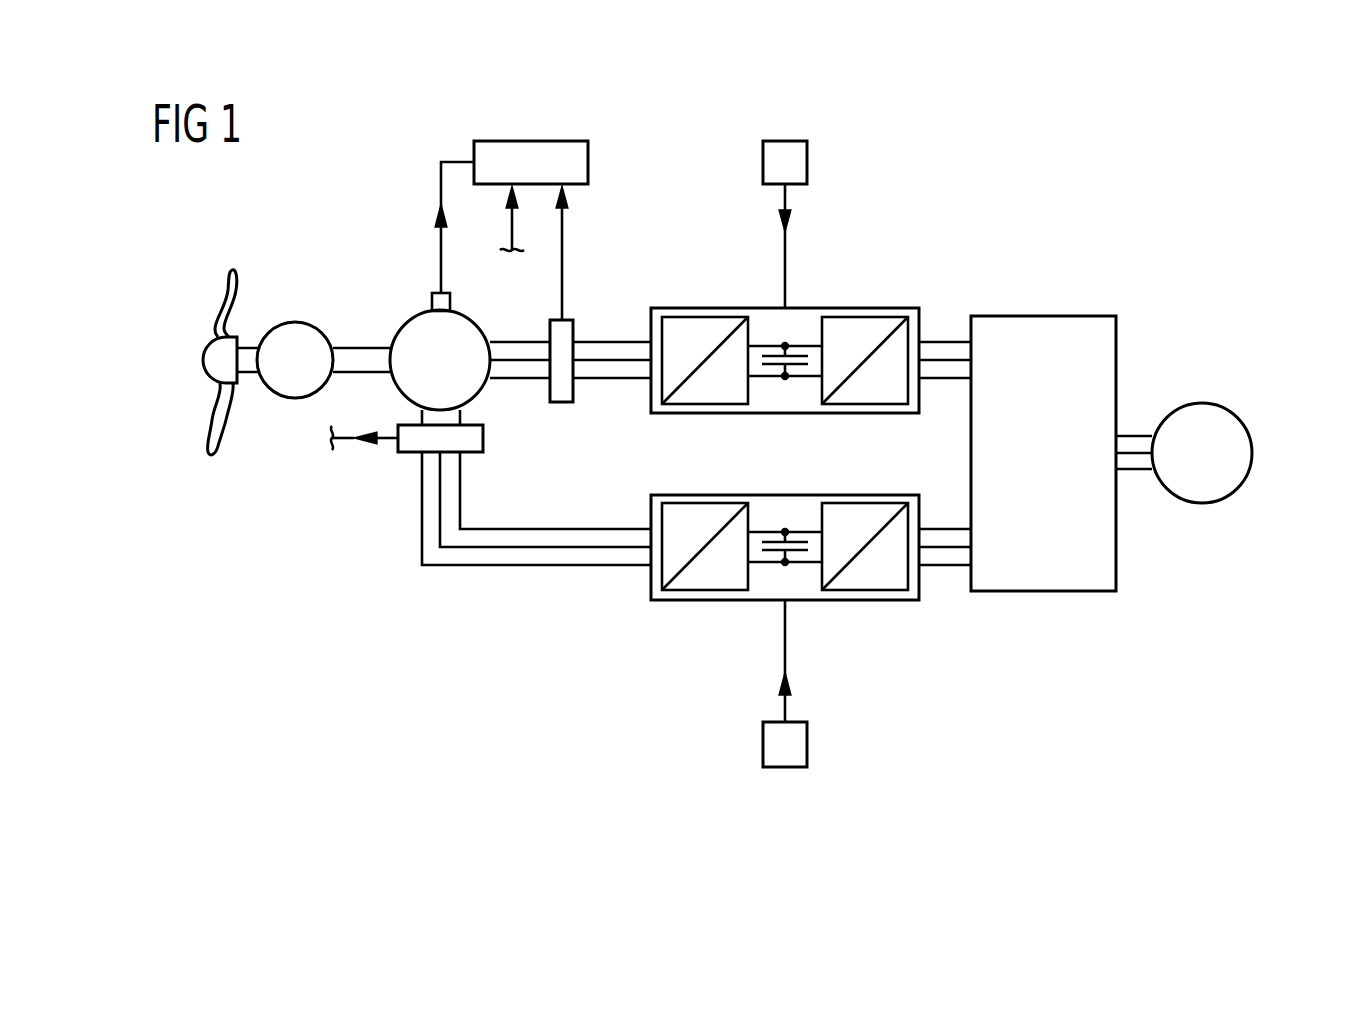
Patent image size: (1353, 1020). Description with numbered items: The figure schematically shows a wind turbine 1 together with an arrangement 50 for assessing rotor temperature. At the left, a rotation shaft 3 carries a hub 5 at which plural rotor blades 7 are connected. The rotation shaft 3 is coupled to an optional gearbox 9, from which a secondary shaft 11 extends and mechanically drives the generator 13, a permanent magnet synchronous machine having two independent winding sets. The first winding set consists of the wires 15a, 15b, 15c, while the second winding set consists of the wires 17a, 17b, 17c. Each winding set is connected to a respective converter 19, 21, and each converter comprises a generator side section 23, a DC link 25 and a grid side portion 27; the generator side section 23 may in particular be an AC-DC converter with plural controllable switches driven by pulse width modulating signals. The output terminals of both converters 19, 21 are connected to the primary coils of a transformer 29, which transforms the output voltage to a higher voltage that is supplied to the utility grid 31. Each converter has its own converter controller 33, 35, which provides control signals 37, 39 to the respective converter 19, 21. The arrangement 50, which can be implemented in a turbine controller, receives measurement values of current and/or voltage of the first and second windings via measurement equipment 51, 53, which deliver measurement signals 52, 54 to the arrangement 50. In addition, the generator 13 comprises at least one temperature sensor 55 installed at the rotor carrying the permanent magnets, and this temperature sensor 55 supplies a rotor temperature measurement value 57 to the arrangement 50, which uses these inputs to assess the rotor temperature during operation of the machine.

The wind turbine 1 is at (1021, 190).
The rotation shaft 3 is at (248, 346).
The hub 5 is at (205, 358).
The rotor blades 7 is at (228, 304).
The gearbox 9 is at (300, 322).
The secondary shaft 11 is at (362, 346).
The generator 13 is at (470, 318).
The wire 15a is at (420, 540).
The wire 15b is at (442, 480).
The wire 15c is at (462, 514).
The wire 17a is at (626, 340).
The wire 17b is at (606, 358).
The wire 17c is at (600, 380).
The converter 19 is at (822, 495).
The converter 21 is at (822, 308).
The generator side section 23 is at (705, 316).
The DC link 25 is at (782, 343).
The grid side portion 27 is at (866, 316).
The transformer 29 is at (1043, 316).
The utility grid 31 is at (1200, 403).
The converter controller 33 is at (808, 742).
The converter controller 35 is at (808, 164).
The control signals 37 is at (788, 672).
The control signals 39 is at (788, 236).
The arrangement 50 is at (588, 166).
The measurement equipment 51 is at (484, 440).
The measurement signal 52 is at (508, 190).
The measurement equipment 53 is at (562, 404).
The measurement signal 54 is at (566, 190).
The temperature sensor 55 is at (432, 296).
The rotor temperature measurement value 57 is at (438, 200).